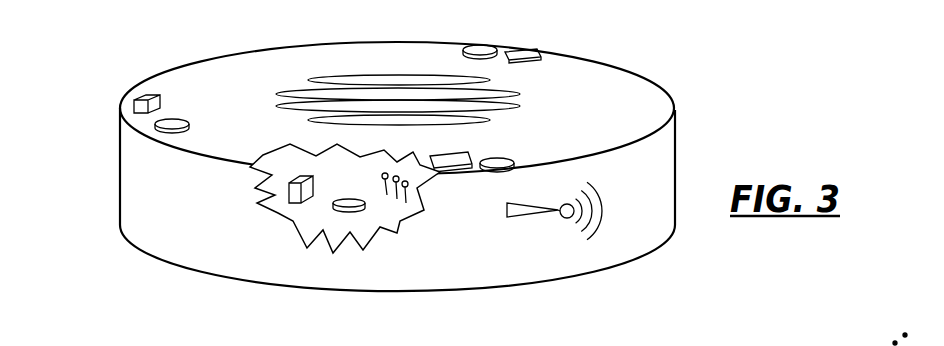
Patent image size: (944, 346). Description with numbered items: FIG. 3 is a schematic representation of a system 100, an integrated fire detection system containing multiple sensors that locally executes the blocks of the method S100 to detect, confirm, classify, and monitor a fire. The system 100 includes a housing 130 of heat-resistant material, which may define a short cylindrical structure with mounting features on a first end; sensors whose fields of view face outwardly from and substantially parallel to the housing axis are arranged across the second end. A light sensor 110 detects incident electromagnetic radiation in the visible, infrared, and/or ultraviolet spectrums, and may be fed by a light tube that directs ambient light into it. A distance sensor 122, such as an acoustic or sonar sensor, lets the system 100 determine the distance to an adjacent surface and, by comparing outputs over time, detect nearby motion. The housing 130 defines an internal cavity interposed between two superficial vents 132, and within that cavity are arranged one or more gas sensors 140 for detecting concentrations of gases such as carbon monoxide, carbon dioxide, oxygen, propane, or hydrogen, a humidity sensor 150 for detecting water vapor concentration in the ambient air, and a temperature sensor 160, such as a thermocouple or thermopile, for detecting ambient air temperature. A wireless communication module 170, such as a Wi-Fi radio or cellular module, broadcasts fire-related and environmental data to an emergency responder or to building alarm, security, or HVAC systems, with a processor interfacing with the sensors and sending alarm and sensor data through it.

The system 100 is at (401, 160).
The method S100 is at (401, 160).
The light sensor 110 is at (473, 164).
The distance sensor 122 is at (482, 46).
The housing 130 is at (665, 163).
The superficial vents 132 is at (373, 82).
The gas sensors 140 is at (275, 212).
The humidity sensor 150 is at (351, 212).
The temperature sensor 160 is at (288, 192).
The wireless communication module 170 is at (547, 213).